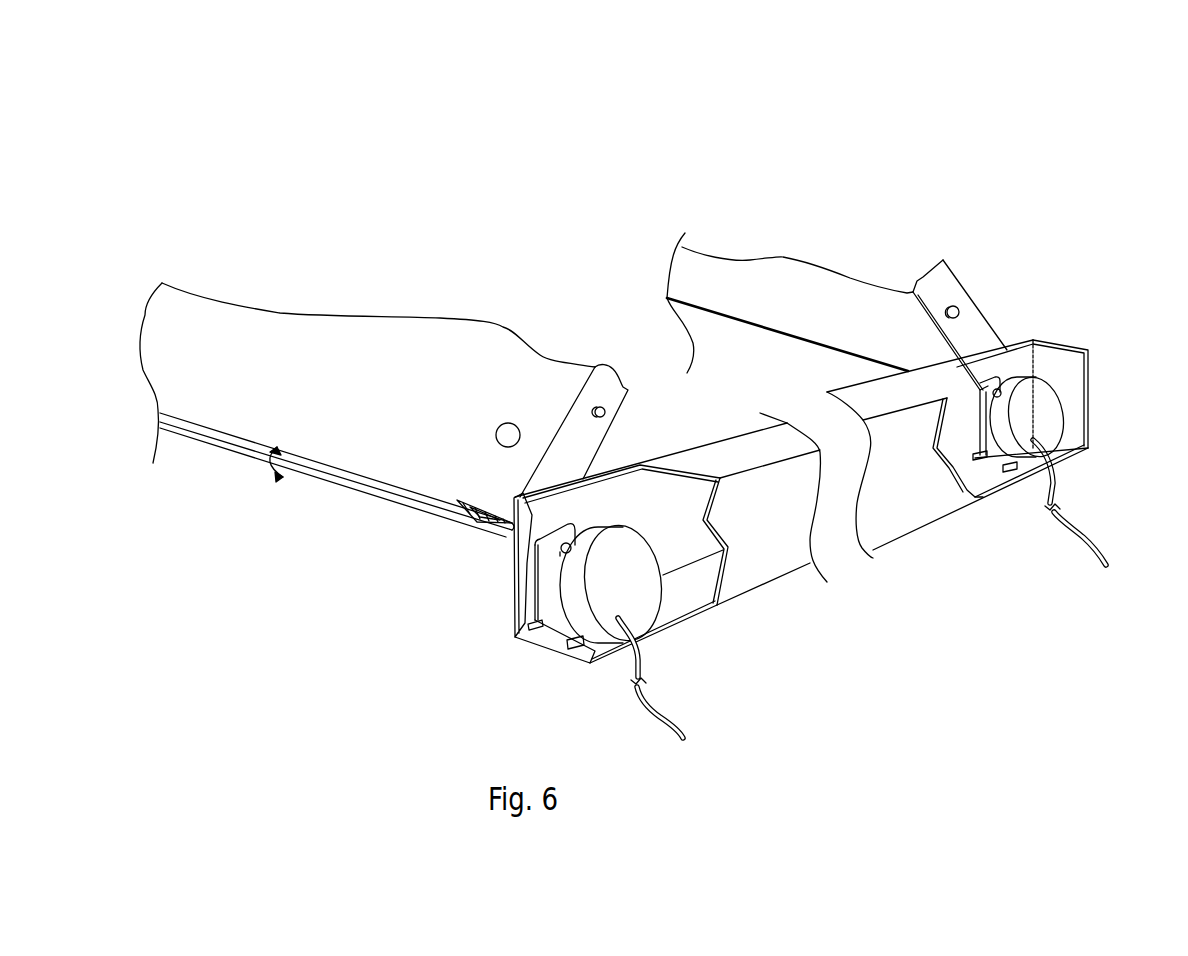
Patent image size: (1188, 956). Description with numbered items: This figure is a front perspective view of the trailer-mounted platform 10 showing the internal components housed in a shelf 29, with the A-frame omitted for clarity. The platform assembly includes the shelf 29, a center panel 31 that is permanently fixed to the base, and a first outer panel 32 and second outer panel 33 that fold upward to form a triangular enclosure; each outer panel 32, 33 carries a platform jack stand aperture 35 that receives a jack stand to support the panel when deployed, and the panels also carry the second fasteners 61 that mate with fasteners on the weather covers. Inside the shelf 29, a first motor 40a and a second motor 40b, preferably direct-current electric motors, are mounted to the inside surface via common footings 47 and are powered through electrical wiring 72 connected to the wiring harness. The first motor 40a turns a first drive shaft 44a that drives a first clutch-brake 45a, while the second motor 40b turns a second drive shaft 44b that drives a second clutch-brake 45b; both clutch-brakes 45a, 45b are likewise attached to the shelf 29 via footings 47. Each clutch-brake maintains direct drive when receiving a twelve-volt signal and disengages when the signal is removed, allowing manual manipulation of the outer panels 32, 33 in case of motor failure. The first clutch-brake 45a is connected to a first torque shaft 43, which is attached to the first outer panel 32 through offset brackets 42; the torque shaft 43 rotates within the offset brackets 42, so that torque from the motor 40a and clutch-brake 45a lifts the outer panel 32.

The trailer-mounted platform 10 is at (236, 118).
The shelf 29 is at (767, 548).
The center panel 31 is at (773, 363).
The first outer panel 32 is at (460, 387).
The second outer panel 33 is at (730, 288).
The platform jack stand aperture 35 is at (513, 427).
The first motor 40a is at (638, 603).
The second motor 40b is at (1043, 425).
The offset bracket 42 is at (490, 522).
The first torque shaft 43 is at (353, 477).
The first drive shaft 44a is at (580, 530).
The second drive shaft 44b is at (990, 395).
The first clutch-brake 45a is at (552, 550).
The second clutch-brake 45b is at (912, 297).
The footing 47 is at (578, 643).
The second fastener 61 is at (600, 410).
The electrical wiring 72 is at (653, 698).